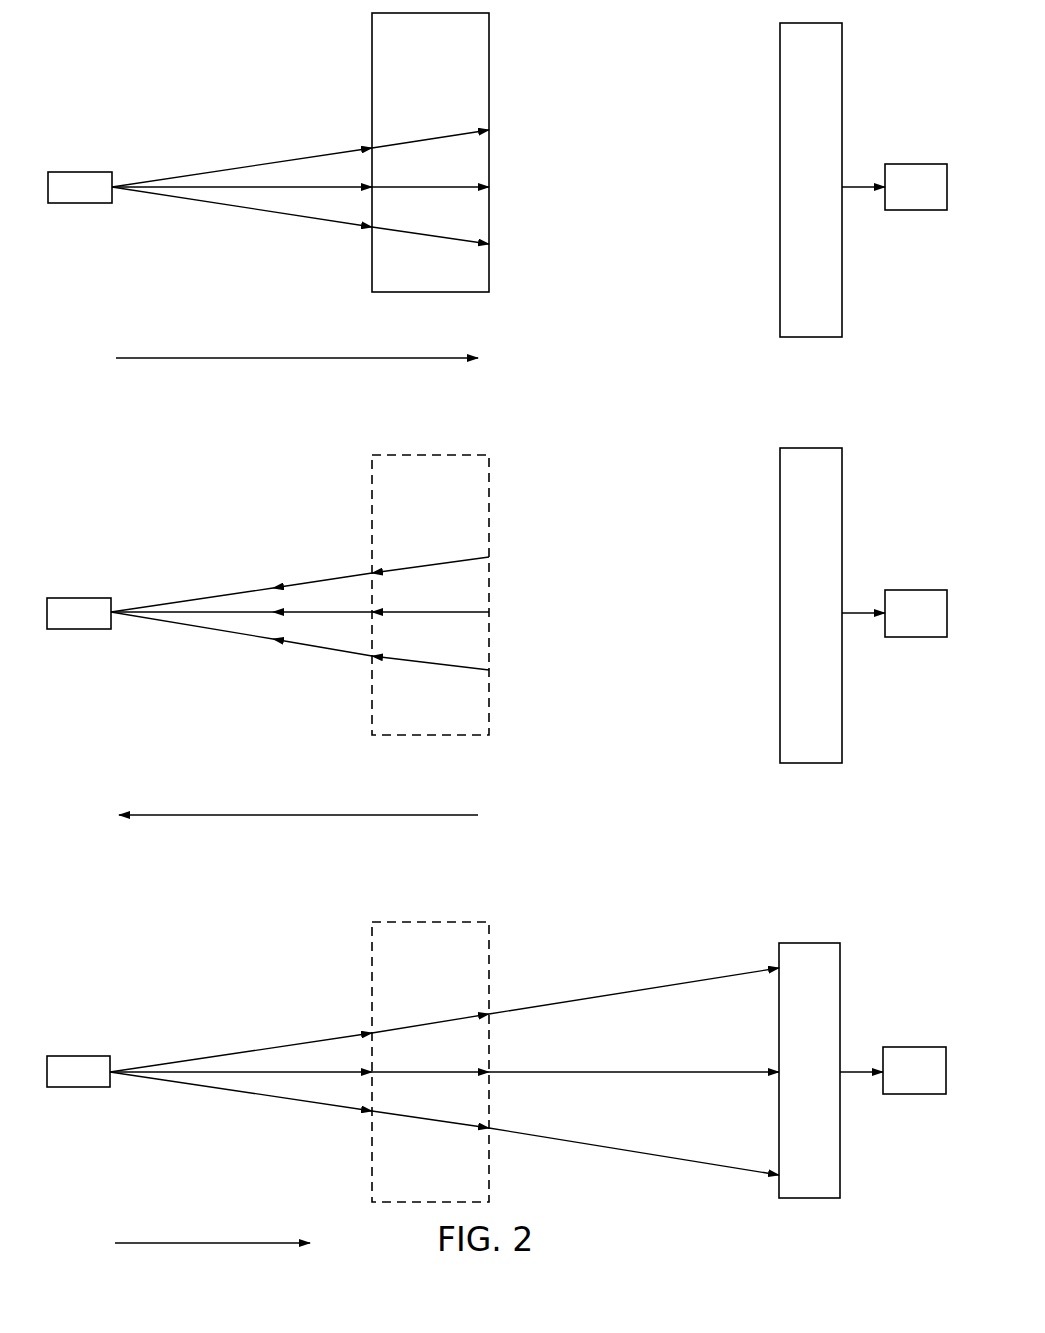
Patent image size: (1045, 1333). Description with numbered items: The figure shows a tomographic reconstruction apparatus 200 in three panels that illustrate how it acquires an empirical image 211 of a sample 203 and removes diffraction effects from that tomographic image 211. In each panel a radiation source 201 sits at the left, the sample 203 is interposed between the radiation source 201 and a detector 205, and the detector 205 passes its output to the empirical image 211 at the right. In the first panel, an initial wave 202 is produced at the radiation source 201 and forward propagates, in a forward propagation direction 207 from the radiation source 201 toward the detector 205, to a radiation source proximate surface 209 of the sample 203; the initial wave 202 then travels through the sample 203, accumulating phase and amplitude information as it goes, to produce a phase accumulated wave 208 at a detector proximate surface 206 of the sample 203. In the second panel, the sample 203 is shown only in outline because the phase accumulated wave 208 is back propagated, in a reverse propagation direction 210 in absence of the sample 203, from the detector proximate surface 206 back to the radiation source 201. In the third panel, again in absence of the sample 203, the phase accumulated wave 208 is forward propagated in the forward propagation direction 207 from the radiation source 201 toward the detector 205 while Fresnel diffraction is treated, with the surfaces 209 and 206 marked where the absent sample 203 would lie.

The tomographic reconstruction apparatus 200 is at (73, 484).
The radiation source 201 is at (79, 629).
The initial wave 202 is at (220, 170).
The sample 203 is at (430, 607).
The detector 205 is at (810, 610).
The detector proximate surface 206 is at (494, 278).
The forward propagation direction 207 is at (225, 357).
The phase accumulated wave 208 is at (474, 131).
The radiation source proximate surface 209 is at (368, 278).
The reverse propagation direction 210 is at (372, 814).
The empirical image 211 is at (893, 629).